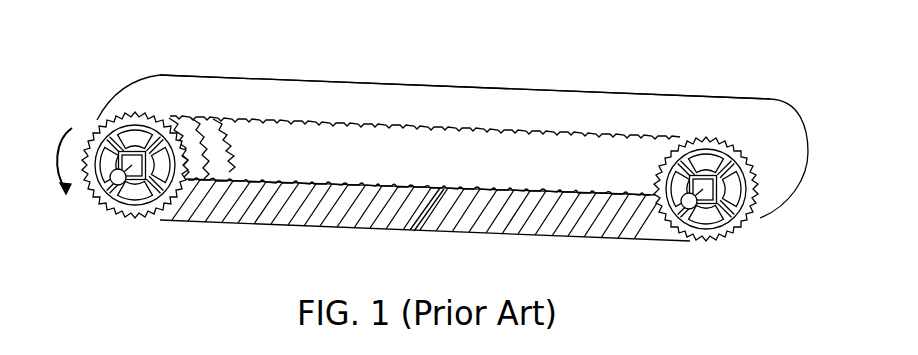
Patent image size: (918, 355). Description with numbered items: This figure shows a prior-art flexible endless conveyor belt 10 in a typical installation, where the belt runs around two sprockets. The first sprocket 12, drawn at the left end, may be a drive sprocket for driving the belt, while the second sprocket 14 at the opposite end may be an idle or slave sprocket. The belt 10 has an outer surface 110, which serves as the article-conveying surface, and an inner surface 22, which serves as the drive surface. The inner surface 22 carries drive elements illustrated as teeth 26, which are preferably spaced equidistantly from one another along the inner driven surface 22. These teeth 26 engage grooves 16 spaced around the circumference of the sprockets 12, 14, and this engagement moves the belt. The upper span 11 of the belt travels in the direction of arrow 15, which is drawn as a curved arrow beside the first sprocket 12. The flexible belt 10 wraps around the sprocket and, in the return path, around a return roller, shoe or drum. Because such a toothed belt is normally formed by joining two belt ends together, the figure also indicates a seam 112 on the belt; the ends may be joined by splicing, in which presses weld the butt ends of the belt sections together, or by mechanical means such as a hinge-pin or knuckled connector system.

The endless conveyor belt 10 is at (355, 58).
The upper span 11 is at (548, 103).
The outer surface 110 is at (407, 96).
The seam 112 is at (432, 197).
The first sprocket 12 is at (132, 207).
The second sprocket 14 is at (756, 216).
The arrow 15 is at (70, 150).
The grooves 16 is at (660, 167).
The inner surface 22 is at (417, 194).
The teeth 26 is at (380, 188).